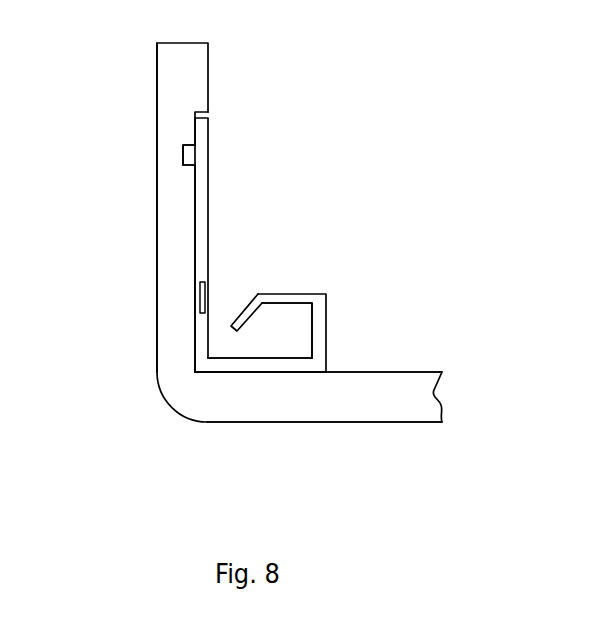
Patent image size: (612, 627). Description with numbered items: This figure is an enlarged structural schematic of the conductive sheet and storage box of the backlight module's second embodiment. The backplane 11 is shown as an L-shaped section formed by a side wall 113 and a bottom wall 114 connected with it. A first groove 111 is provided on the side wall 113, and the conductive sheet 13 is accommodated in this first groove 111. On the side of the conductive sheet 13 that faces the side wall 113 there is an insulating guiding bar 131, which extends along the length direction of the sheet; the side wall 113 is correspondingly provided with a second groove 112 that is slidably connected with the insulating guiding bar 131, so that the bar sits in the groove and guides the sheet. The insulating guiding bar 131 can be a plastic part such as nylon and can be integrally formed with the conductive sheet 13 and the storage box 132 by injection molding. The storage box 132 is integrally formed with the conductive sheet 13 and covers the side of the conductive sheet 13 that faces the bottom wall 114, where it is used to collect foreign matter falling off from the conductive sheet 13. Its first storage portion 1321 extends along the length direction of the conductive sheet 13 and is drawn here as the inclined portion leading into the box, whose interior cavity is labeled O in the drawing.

The backplane 11 is at (189, 468).
The first groove 111 is at (193, 110).
The second groove 112 is at (181, 145).
The side wall 113 is at (170, 308).
The bottom wall 114 is at (290, 410).
The conductive sheet 13 is at (200, 193).
The insulating guiding bar 131 is at (188, 153).
The storage box 132 is at (317, 347).
The first storage portion 1321 is at (238, 311).
The opening O is at (285, 325).